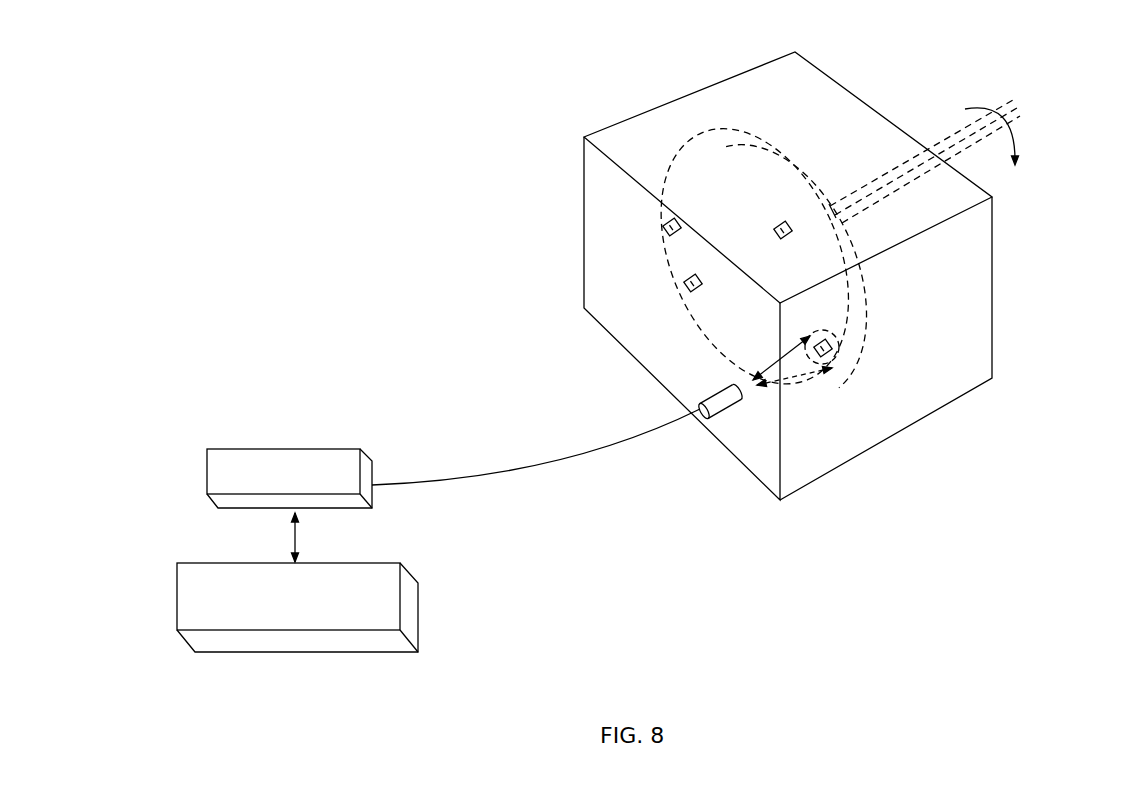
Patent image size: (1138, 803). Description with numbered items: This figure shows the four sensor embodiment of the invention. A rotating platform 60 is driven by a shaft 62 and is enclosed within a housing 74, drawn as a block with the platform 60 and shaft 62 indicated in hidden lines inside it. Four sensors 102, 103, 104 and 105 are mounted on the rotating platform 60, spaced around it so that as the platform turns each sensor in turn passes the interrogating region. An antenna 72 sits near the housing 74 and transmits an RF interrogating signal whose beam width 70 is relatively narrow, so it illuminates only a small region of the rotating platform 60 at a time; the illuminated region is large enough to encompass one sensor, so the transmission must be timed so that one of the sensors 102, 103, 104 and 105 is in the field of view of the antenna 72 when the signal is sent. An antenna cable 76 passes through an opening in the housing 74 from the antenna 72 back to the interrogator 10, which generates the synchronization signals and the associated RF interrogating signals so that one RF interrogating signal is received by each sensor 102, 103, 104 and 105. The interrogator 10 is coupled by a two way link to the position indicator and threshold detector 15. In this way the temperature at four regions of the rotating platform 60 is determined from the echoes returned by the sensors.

The interrogator 10 is at (287, 448).
The position indicator / threshold detector 15 is at (343, 562).
The rotating platform 60 is at (843, 296).
The shaft 62 is at (947, 140).
The beam width 70 is at (843, 330).
The antenna 72 is at (720, 387).
The housing 74 is at (615, 257).
The antenna cable 76 is at (523, 467).
The sensor 102 is at (790, 213).
The sensor 103 is at (663, 217).
The sensor 104 is at (683, 277).
The sensor 105 is at (848, 365).